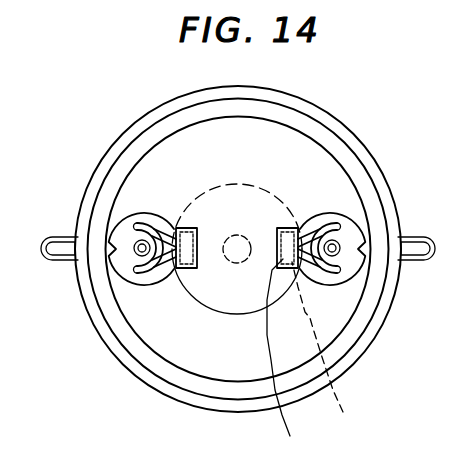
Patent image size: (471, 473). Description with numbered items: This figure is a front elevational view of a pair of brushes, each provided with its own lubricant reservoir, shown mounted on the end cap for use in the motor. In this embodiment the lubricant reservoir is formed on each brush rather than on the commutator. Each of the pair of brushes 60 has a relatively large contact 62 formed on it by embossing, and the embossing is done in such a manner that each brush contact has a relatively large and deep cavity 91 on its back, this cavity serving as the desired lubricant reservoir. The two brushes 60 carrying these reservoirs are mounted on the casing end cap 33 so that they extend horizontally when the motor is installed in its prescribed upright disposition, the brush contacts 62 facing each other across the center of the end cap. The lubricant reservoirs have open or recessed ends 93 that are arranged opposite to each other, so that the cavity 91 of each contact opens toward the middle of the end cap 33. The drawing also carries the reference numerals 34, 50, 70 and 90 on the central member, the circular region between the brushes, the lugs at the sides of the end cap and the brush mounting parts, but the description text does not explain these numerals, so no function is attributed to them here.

The casing end cap 33 is at (252, 103).
The central shaft 34 is at (237, 235).
The rotatable disc 50 is at (230, 316).
The brush 60 is at (143, 285).
The contact 62 is at (297, 230).
The mounting lug 70 is at (410, 236).
The latch engaging bracket 90 is at (183, 230).
The cavity 91 is at (333, 344).
The open or recessed end 93 is at (294, 354).